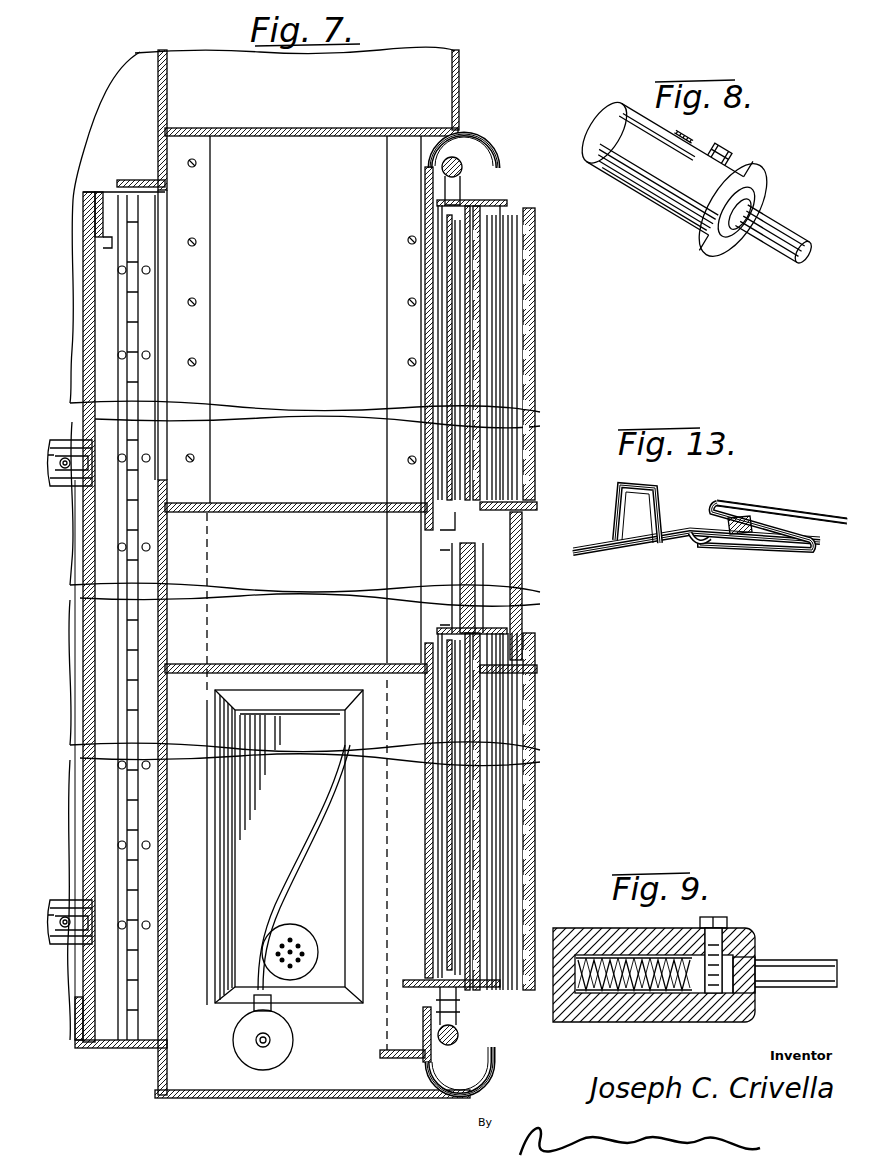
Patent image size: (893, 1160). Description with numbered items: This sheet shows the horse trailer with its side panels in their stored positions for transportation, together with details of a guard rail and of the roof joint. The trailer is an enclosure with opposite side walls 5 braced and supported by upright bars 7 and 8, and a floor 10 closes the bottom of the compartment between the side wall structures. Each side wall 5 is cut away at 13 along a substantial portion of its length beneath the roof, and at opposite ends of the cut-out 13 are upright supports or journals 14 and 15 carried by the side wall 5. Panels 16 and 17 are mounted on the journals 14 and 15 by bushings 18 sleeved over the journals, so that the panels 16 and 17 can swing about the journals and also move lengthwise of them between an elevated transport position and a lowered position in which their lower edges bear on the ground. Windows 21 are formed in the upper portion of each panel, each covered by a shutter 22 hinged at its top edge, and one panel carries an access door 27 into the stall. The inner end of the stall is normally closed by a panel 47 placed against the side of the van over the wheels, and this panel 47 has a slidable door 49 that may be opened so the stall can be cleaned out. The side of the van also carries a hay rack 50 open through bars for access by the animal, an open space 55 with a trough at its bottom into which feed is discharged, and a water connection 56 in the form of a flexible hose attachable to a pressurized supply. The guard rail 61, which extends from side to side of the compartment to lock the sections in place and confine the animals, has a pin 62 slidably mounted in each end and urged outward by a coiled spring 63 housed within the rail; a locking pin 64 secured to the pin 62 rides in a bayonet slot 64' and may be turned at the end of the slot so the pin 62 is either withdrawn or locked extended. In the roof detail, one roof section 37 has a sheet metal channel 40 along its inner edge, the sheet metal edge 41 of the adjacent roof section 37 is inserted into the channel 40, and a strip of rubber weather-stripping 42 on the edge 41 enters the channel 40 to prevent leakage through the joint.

In FIG. 7, the side wall 5 is at (456, 50).
In FIG. 7, the upright bar 7 is at (426, 128).
In FIG. 7, the upright bar 8 is at (172, 126).
In FIG. 7, the floor 10 is at (84, 455).
In FIG. 7, the cut-out 13 is at (452, 130).
In FIG. 7, the upright support or journal 14 is at (460, 1032).
In FIG. 7, the upright support or journal 15 is at (462, 162).
In FIG. 7, the panel 16 is at (545, 385).
In FIG. 7, the panel 17 is at (448, 328).
In FIG. 7, the bushing 18 is at (466, 165).
In FIG. 7, the window 21 is at (508, 330).
In FIG. 7, the shutter 22 is at (498, 370).
In FIG. 7, the access door 27 is at (462, 578).
In FIG. 13, the roof section 37 is at (578, 553).
In FIG. 13, the sheet metal channel 40 is at (810, 550).
In FIG. 13, the sheet metal edge 41 is at (762, 536).
In FIG. 13, the rubber weather-stripping 42 is at (730, 520).
In FIG. 7, the panel 47 is at (85, 572).
In FIG. 7, the door 49 is at (80, 248).
In FIG. 7, the hay rack 50 is at (258, 162).
In FIG. 7, the open space 55 is at (340, 1082).
In FIG. 7, the water connection 56 is at (284, 1062).
In FIG. 7, the guard rail 61 is at (66, 486).
In FIG. 8, the guard rail 61 is at (649, 181).
In FIG. 9, the guard rail 61 is at (575, 1022).
In FIG. 8, the pin 62 is at (762, 224).
In FIG. 9, the pin 62 is at (836, 952).
In FIG. 9, the coiled spring 63 is at (655, 990).
In FIG. 7, the locking pin 64 is at (63, 692).
In FIG. 8, the locking pin 64 is at (754, 150).
In FIG. 9, the locking pin 64 is at (731, 914).
In FIG. 7, the bayonet slot 64' is at (65, 647).
In FIG. 8, the bayonet slot 64' is at (728, 125).